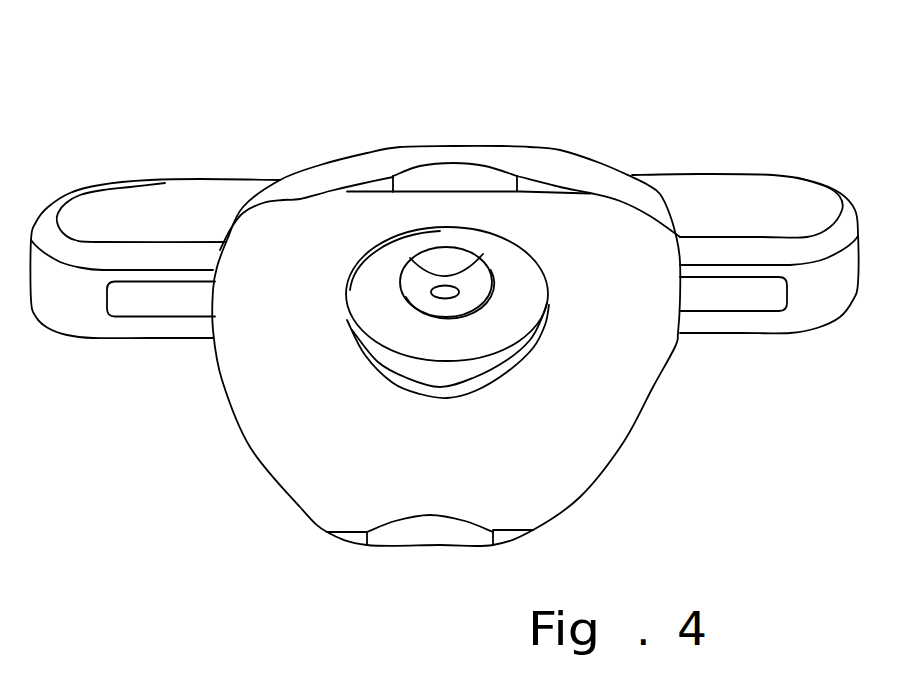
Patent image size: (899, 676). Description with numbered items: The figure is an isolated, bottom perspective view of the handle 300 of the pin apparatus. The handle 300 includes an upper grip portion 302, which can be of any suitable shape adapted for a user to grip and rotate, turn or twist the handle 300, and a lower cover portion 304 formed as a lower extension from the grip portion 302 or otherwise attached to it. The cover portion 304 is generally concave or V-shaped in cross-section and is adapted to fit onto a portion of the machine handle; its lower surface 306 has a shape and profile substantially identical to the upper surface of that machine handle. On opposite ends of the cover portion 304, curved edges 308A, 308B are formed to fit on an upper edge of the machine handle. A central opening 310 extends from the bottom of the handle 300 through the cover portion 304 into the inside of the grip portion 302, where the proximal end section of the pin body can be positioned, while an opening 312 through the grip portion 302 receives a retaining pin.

The handle 300 is at (253, 87).
The upper grip portion 302 is at (689, 175).
The cover portion 304 is at (668, 408).
The lower surface 306 is at (328, 401).
The edge 308A is at (432, 180).
The edge 308B is at (418, 532).
The central opening 310 is at (401, 284).
The opening 312 is at (449, 292).